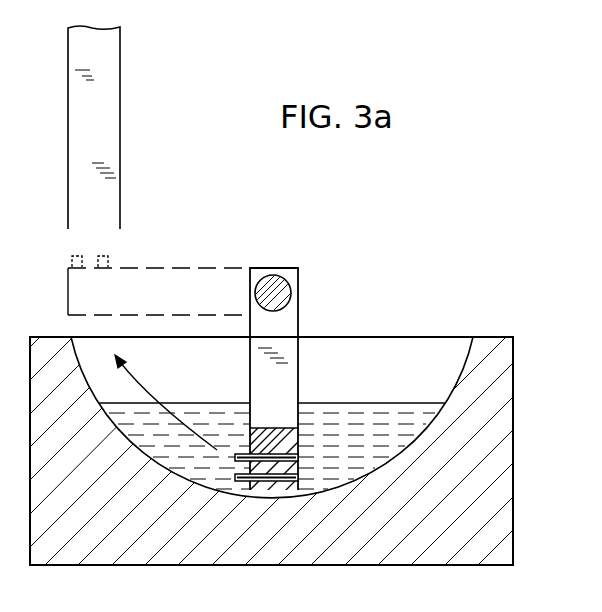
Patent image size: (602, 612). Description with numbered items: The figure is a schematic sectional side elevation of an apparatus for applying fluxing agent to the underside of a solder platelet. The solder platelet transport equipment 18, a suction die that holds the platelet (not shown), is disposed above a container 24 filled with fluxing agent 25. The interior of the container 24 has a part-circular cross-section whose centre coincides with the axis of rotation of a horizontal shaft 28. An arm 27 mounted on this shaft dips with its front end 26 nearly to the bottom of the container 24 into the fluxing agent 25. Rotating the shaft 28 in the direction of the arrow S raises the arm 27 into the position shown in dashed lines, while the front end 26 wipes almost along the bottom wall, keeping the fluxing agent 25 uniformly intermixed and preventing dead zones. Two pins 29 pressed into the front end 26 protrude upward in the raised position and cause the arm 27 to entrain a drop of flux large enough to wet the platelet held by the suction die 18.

The solder platelet transport equipment 18 is at (108, 120).
The container 24 is at (387, 541).
The fluxing agent 25 is at (377, 440).
The front end 26 is at (68, 291).
The arm 27 is at (203, 272).
The horizontal shaft 28 is at (290, 296).
The pins 29 is at (74, 256).
The arrow S is at (138, 380).